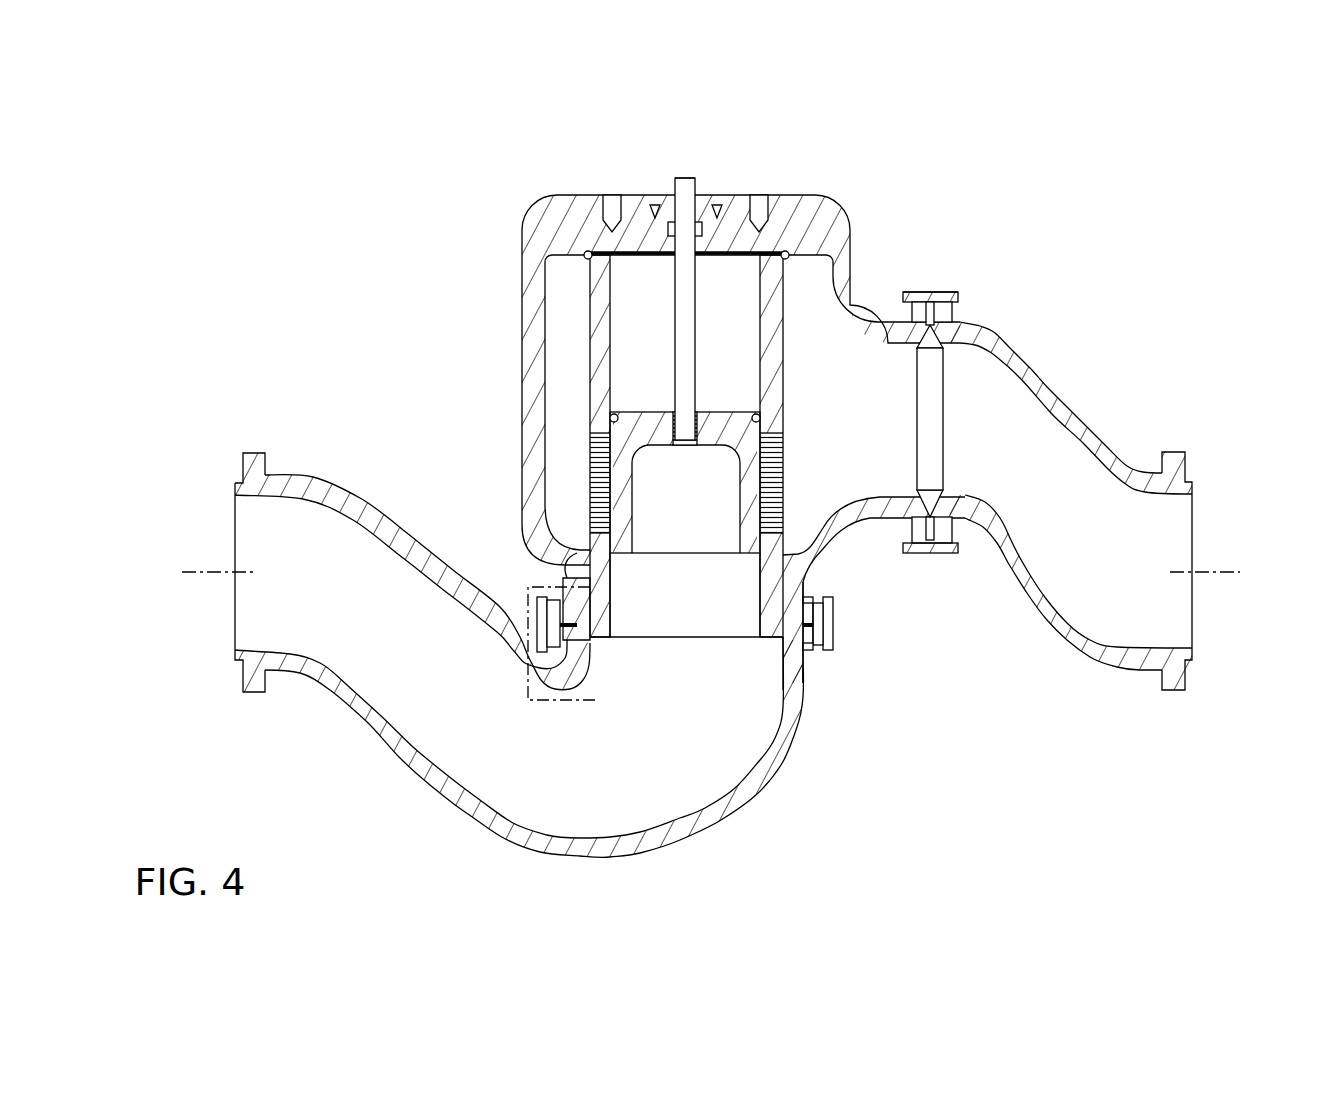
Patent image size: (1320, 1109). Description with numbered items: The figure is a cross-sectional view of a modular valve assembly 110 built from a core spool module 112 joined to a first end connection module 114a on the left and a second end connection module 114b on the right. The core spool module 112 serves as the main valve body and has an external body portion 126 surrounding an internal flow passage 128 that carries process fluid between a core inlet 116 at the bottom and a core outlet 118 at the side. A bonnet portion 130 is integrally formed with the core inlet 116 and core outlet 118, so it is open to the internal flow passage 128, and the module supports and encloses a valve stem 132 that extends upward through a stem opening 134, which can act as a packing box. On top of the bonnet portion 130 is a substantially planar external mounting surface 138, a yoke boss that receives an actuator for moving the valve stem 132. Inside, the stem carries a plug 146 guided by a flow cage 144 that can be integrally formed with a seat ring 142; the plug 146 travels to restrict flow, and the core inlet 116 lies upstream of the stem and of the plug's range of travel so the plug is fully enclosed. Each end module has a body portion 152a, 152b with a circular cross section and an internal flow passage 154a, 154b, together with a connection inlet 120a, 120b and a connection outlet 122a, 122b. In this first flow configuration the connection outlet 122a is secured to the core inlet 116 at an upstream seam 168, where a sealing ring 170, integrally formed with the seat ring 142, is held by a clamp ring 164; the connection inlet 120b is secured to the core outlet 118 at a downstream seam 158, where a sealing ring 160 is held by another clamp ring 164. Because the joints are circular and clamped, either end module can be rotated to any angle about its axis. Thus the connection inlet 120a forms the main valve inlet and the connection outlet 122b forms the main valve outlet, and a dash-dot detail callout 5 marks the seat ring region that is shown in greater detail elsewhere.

The modular valve assembly 110 is at (305, 212).
The core spool module 112 is at (488, 295).
The first end connection module 114a is at (420, 803).
The second end connection module 114b is at (1108, 452).
The core inlet 116 is at (720, 607).
The core outlet 118 is at (907, 420).
The connection inlet 120a is at (258, 597).
The connection inlet 120b is at (958, 448).
The connection outlet 122a is at (663, 660).
The connection outlet 122b is at (1163, 545).
The external body portion 126 is at (520, 380).
The internal flow passage 128 is at (745, 560).
The bonnet portion 130 is at (490, 228).
The valve stem 132 is at (700, 295).
The stem opening 134 is at (670, 213).
The external mounting surface 138 is at (632, 222).
The seat ring 142 is at (580, 565).
The flow cage 144 is at (598, 482).
The plug 146 is at (752, 462).
The body portion 152a is at (315, 475).
The body portion 152b is at (1082, 655).
The internal flow passage 154a is at (388, 685).
The internal flow passage 154b is at (1040, 428).
The downstream seam 158 is at (940, 285).
The sealing ring 160 is at (918, 345).
The clamp ring 164 is at (927, 297).
The upstream seam 168 is at (835, 630).
The sealing ring 170 is at (790, 650).
The section 5 detail box 5 is at (600, 595).